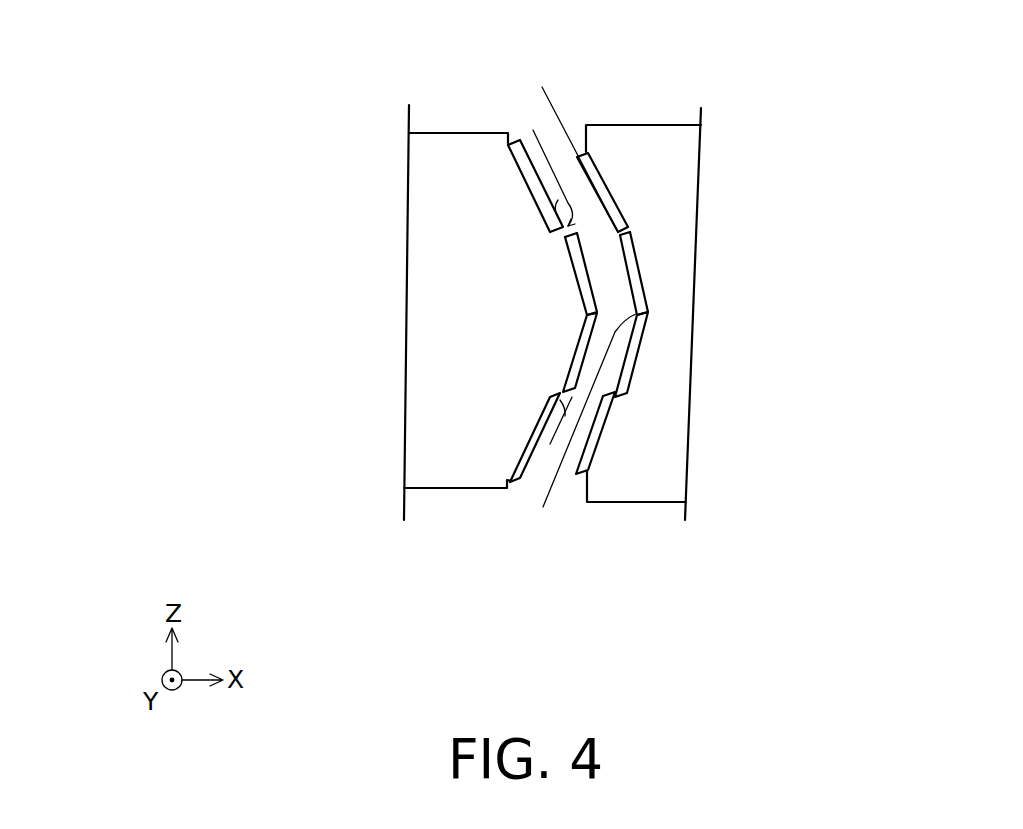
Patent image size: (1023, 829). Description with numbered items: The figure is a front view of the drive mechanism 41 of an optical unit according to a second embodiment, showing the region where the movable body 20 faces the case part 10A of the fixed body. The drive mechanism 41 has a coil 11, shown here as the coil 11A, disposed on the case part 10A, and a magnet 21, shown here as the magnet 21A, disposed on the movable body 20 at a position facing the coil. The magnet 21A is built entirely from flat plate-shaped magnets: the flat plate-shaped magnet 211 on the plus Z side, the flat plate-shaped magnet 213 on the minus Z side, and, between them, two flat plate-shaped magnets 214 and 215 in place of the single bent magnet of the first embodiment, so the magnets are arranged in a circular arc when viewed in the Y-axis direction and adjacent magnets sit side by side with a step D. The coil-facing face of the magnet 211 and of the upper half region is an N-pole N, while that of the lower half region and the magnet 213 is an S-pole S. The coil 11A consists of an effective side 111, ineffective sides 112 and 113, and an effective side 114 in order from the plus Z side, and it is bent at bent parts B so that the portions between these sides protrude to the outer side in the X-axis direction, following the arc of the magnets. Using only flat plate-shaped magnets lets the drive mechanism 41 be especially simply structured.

The movable body 20 is at (462, 131).
The case part 10A is at (628, 124).
The drive mechanism 41 is at (938, 130).
The magnet 21 is at (381, 311).
The magnet 21A is at (396, 311).
The flat plate-shaped magnet 211 is at (527, 180).
The flat plate-shaped magnet 214 is at (577, 280).
The flat plate-shaped magnet 215 is at (578, 338).
The flat plate-shaped magnet 213 is at (537, 424).
The coil 11 is at (765, 313).
The coil 11A is at (765, 313).
The effective side 111 is at (597, 190).
The ineffective side 112 is at (633, 270).
The ineffective side 113 is at (633, 353).
The effective side 114 is at (695, 433).
The bent part B is at (584, 297).
The step D is at (548, 285).
The N-pole N is at (556, 214).
The S-pole S is at (579, 362).